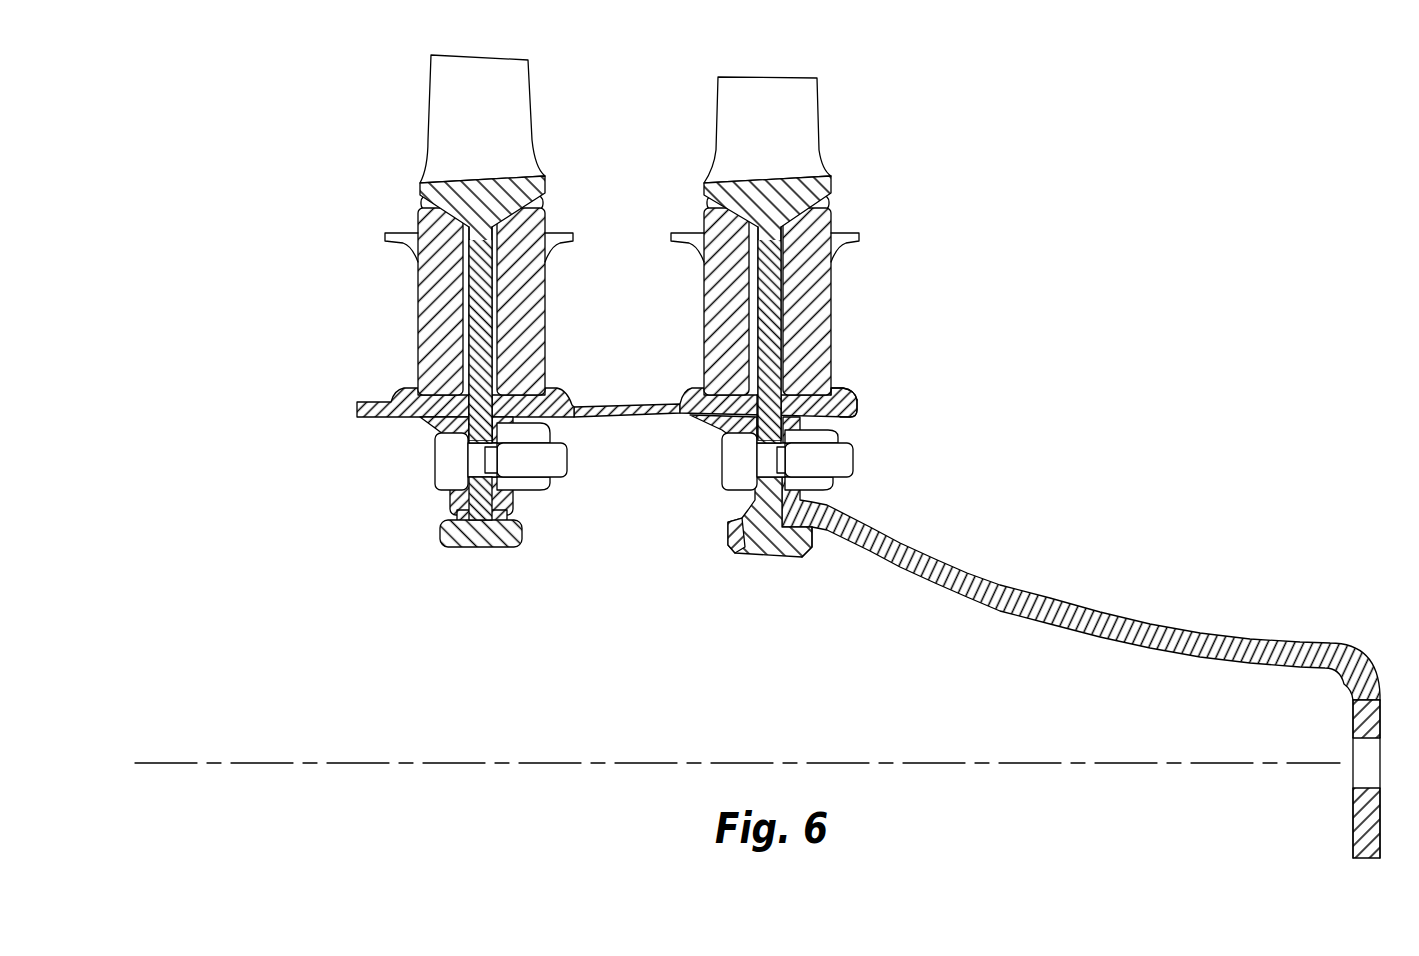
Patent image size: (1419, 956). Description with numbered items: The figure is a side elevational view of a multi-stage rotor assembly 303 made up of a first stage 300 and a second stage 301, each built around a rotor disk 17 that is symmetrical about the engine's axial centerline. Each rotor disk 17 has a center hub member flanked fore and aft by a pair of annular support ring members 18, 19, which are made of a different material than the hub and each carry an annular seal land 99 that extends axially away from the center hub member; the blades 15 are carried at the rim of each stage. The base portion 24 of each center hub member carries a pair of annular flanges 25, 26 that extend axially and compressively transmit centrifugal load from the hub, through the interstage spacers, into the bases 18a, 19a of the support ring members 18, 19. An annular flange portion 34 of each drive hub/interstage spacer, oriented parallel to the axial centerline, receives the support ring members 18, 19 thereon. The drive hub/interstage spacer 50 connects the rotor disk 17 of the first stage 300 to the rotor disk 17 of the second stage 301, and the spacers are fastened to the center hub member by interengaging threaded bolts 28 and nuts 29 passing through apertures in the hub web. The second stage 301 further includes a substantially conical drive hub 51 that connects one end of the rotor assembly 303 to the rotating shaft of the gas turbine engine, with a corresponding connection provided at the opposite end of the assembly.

The turbine blade 15 is at (513, 68).
The rotor disk 17 is at (692, 193).
The support ring member 18 is at (415, 303).
The base of support ring member 18a is at (717, 435).
The support ring member 19 is at (835, 293).
The base of support ring member 19a is at (857, 400).
The base portion 24 is at (773, 553).
The annular flange 25 is at (812, 533).
The annular flange 26 is at (737, 549).
The threaded bolt 28 is at (848, 457).
The nut 29 is at (832, 490).
The annular flange portion 34 is at (843, 385).
The drive hub/interstage spacer 50 is at (608, 420).
The conical drive hub 51 is at (1093, 610).
The annular seal land 99 is at (387, 244).
The first stage 300 is at (370, 168).
The second stage 301 is at (872, 145).
The multi-stage rotor assembly 303 is at (637, 78).